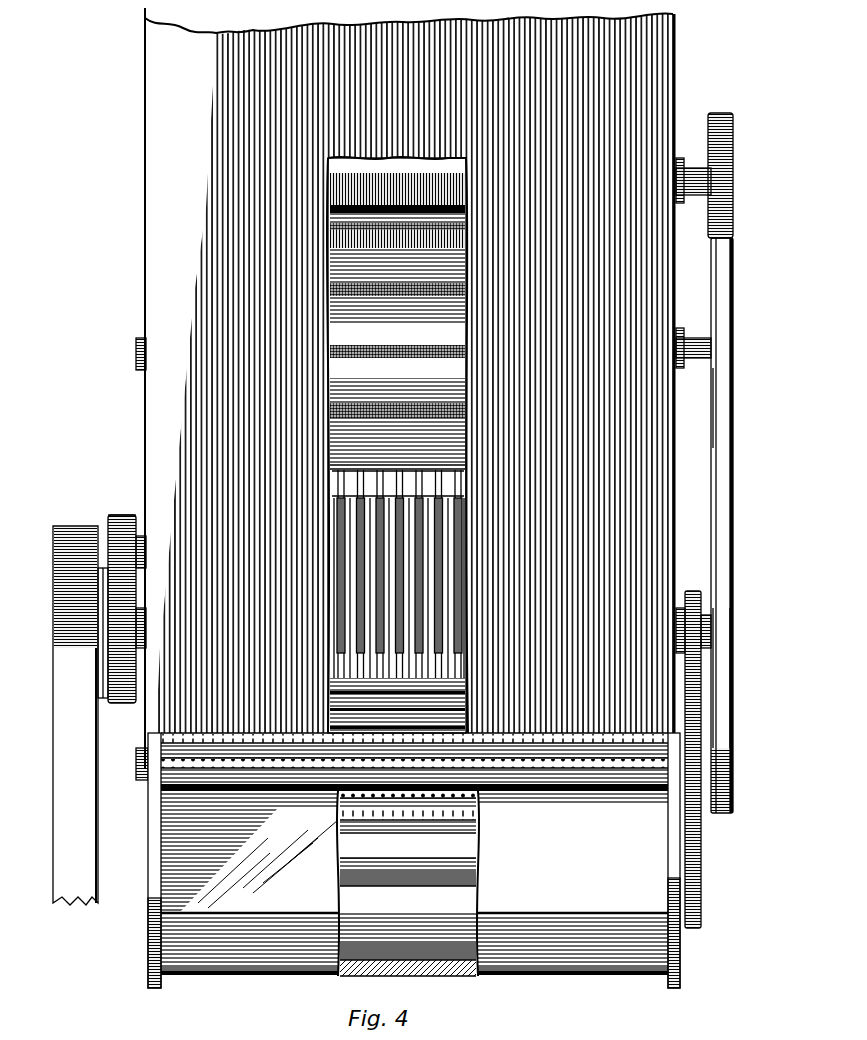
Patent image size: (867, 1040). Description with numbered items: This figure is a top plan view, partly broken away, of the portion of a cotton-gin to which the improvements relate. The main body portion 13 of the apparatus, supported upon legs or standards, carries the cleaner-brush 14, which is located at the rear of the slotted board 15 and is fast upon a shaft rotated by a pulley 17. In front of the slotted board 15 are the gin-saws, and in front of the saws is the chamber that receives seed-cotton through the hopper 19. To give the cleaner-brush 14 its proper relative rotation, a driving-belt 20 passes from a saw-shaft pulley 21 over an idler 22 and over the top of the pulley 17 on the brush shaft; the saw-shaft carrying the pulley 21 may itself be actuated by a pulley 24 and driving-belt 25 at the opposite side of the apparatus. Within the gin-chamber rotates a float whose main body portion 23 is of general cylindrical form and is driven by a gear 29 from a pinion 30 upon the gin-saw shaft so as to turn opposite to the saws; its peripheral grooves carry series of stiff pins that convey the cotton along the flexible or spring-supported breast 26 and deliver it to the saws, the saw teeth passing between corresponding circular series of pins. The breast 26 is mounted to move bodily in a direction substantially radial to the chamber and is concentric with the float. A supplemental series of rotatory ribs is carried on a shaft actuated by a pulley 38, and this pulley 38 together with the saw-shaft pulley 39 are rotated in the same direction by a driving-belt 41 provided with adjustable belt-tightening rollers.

The main body portion 13 is at (152, 157).
The cleaner-brush 14 is at (397, 445).
The slotted board 15 is at (420, 470).
The pulley 17 is at (722, 292).
The hopper 19 is at (414, 881).
The driving-belt 20 is at (712, 415).
The saw-shaft pulley 21 is at (722, 678).
The idler 22 is at (725, 127).
The main body portion of the float 23 is at (267, 742).
The pulley 24 is at (45, 722).
The driving-belt 25 is at (90, 795).
The flexible or spring-supported breast 26 is at (425, 832).
The gear 29 is at (692, 857).
The pinion 30 is at (682, 582).
The pulley 38 is at (97, 690).
The pulley 39 is at (100, 510).
The driving-belt 41 is at (115, 505).